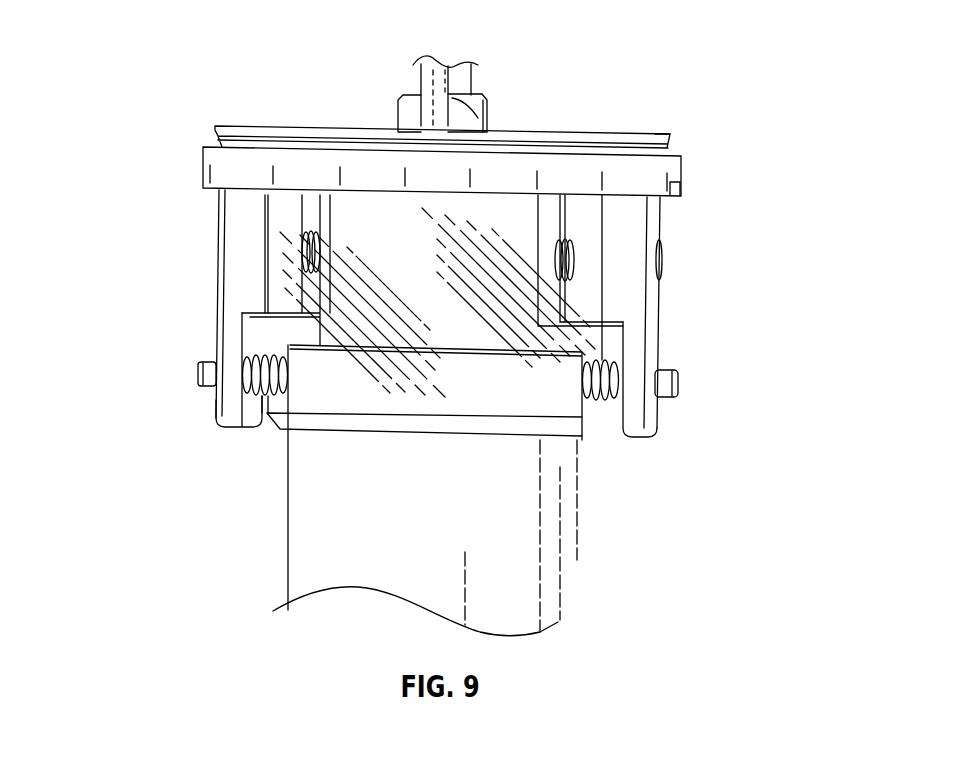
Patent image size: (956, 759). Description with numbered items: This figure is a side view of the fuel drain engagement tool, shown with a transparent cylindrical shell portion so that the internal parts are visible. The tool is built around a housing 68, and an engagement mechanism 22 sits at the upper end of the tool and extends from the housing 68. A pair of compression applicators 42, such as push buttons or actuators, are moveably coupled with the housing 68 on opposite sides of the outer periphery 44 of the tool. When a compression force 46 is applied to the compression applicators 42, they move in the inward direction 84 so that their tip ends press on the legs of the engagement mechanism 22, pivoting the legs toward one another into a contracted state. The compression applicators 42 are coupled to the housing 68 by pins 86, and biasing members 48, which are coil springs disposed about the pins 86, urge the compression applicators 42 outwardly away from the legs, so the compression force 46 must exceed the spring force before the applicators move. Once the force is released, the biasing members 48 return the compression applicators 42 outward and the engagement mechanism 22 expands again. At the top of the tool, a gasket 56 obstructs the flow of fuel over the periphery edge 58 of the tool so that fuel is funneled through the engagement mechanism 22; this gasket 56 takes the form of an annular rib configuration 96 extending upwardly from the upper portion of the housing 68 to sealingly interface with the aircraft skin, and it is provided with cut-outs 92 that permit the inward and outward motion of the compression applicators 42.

The engagement mechanism 22 is at (479, 86).
The annular rib configuration 96 is at (224, 127).
The biasing members 48 is at (313, 232).
The housing 68 is at (519, 125).
The compression applicators 42 is at (228, 231).
The periphery edge 58 is at (671, 131).
The gasket 56 is at (199, 140).
The outer periphery 44 is at (688, 195).
The cut-outs 92 is at (676, 197).
The compression force 46 is at (440, 284).
The inward direction 84 is at (440, 284).
The pins 86 is at (177, 298).